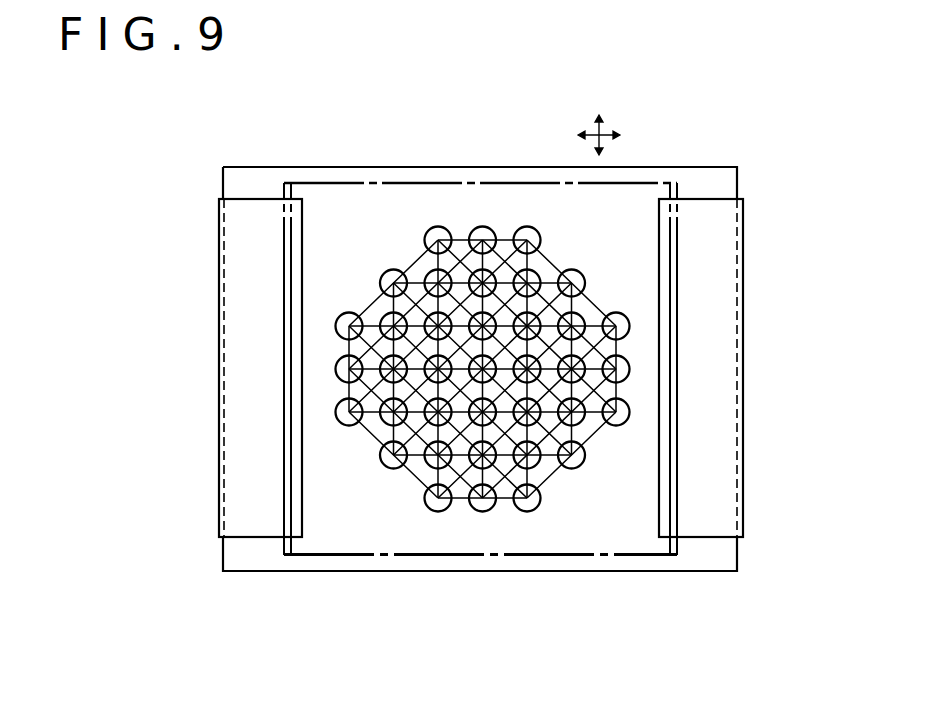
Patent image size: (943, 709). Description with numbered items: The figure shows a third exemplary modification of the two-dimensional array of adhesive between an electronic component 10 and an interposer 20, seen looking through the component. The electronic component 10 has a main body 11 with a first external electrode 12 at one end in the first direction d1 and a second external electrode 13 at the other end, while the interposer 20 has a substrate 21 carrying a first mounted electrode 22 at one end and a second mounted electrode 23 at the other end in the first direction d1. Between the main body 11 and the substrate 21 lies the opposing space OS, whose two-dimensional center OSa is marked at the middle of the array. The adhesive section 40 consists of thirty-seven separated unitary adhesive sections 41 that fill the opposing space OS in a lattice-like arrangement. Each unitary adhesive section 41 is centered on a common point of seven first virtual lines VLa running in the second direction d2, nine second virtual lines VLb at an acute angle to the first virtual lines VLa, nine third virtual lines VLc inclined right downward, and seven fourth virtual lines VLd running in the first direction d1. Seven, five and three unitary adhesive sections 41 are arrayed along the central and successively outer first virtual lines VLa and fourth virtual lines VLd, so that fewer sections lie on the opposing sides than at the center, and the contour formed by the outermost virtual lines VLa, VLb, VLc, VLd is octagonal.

The electronic component 10 is at (477, 182).
The main body 11 is at (382, 192).
The first external electrode 12 is at (284, 190).
The second external electrode 13 is at (677, 238).
The interposer 20 is at (223, 184).
The substrate 21 is at (233, 553).
The first mounted electrode 22 is at (228, 409).
The second mounted electrode 23 is at (722, 409).
The adhesive section 40 is at (533, 510).
The unitary adhesive section 41 is at (478, 512).
The opposing space OS is at (495, 431).
The center of the opposing space OSa is at (485, 372).
The first virtual lines VLa is at (526, 260).
The second virtual lines VLb is at (418, 259).
The third virtual lines VLc is at (591, 305).
The fourth virtual lines VLd is at (503, 499).
The first direction d1 is at (613, 136).
The second direction d2 is at (599, 122).